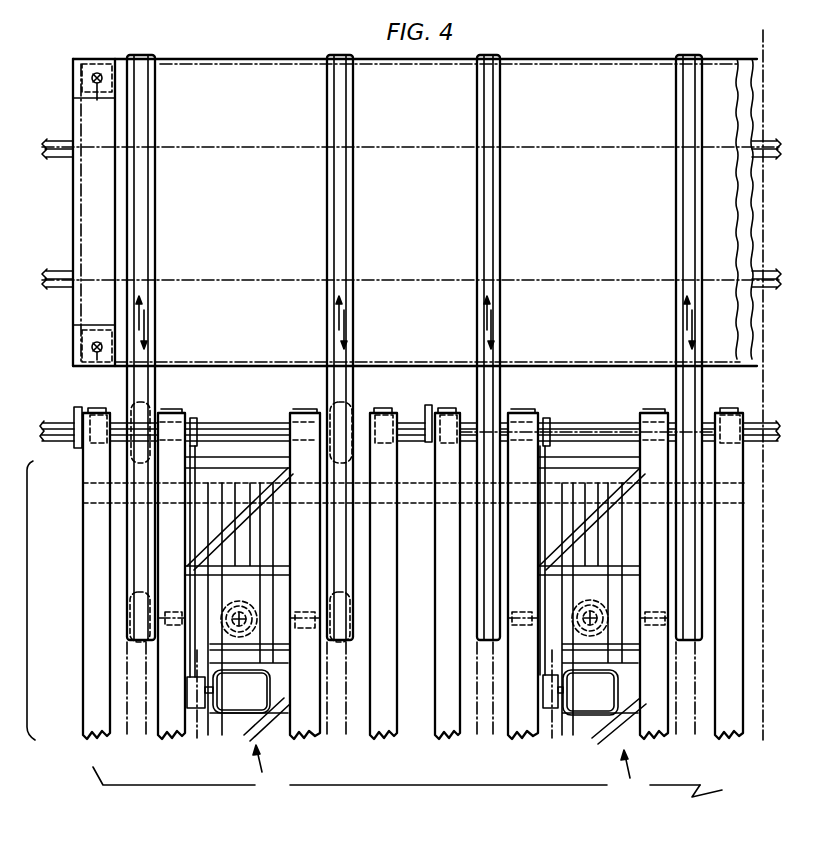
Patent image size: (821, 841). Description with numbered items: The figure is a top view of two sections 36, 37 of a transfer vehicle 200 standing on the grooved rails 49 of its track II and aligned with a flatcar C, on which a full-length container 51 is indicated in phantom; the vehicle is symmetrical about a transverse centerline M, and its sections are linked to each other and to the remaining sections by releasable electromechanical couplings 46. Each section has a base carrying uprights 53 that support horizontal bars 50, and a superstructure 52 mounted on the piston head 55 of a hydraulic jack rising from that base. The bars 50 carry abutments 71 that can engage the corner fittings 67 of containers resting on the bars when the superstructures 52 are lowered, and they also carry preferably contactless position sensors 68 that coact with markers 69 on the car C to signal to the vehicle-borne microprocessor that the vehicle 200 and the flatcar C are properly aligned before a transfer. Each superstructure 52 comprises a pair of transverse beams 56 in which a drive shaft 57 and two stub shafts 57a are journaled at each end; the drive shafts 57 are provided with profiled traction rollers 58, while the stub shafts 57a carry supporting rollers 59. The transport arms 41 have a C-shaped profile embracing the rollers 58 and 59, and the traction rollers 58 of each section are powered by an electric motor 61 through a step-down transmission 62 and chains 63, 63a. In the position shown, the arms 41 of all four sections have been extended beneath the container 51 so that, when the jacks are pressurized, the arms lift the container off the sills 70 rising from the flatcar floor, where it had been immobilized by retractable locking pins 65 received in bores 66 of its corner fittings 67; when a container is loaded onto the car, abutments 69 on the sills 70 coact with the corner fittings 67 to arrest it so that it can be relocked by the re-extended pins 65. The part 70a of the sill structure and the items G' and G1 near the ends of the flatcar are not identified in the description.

The vehicle section 36 is at (350, 628).
The vehicle section 37 is at (619, 628).
The transport arm 41 is at (152, 291).
The releasable electromechanical coupling 46 is at (410, 438).
The grooved rail 49 is at (51, 442).
The horizontal bar 50 is at (85, 556).
The full-length container 51 is at (569, 59).
The superstructure 52 is at (243, 568).
The upright 53 is at (92, 504).
The piston head 55 is at (252, 613).
The transverse beam 56 is at (308, 411).
The drive shaft 57 is at (218, 423).
The stub shaft 57a is at (176, 611).
The traction roller 58 is at (148, 403).
The supporting roller 59 is at (133, 614).
The electric motor 61 is at (229, 703).
The step-down transmission 62 is at (187, 688).
The chain 63 is at (193, 517).
The chain 63a is at (203, 742).
The retractable locking pin 65 is at (98, 102).
The bore 66 is at (98, 73).
The corner fitting 67 is at (80, 61).
The position sensor 68 is at (74, 412).
The abutment 69 is at (72, 366).
The sill 70 is at (72, 88).
The bracket flange 70a is at (120, 216).
The abutment 71 is at (98, 409).
The transfer vehicle 200 is at (716, 808).
The flatcar C is at (234, 59).
The transverse centerline M is at (766, 94).
The belt G' is at (52, 214).
The belt G1 is at (769, 184).
The track II is at (23, 600).